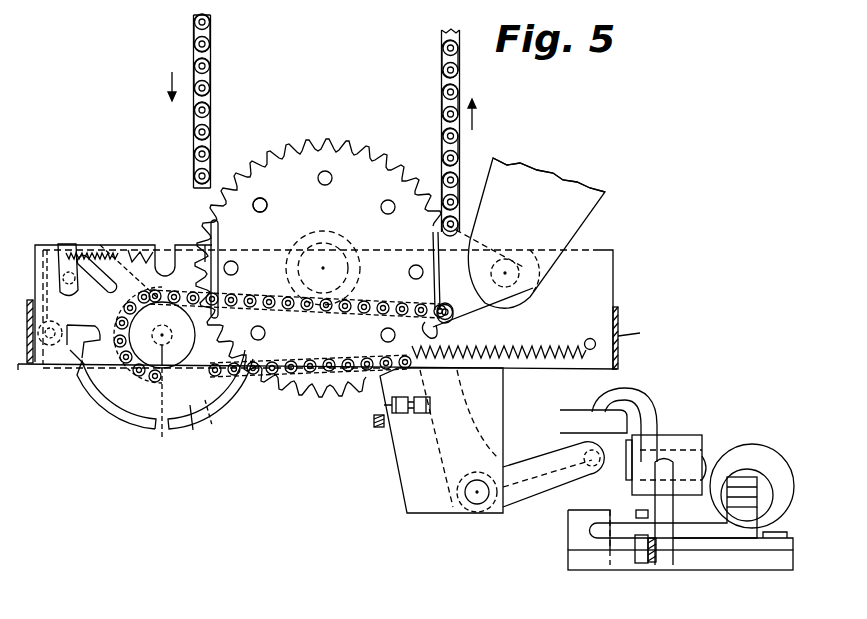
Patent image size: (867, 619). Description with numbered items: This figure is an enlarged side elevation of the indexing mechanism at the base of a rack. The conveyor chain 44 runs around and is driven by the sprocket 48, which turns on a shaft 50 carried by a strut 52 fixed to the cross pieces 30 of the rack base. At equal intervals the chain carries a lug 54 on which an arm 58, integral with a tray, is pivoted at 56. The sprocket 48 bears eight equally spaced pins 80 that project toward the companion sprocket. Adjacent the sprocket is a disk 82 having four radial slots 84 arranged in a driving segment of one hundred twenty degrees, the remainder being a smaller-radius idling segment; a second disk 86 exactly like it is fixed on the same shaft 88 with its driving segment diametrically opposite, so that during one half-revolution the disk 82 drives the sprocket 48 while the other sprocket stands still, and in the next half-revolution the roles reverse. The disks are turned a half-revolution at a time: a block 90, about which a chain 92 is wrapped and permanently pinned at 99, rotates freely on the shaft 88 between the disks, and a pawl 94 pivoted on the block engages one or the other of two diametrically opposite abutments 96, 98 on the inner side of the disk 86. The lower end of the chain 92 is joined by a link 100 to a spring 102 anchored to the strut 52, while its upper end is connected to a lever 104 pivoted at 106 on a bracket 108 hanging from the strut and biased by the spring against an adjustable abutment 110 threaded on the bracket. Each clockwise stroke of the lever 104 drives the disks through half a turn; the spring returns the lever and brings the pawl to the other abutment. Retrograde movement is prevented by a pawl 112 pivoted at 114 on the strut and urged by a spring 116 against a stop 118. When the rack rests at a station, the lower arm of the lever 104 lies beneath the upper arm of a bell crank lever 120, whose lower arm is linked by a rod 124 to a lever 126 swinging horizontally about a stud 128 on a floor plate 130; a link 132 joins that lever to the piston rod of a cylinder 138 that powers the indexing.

The cross pieces 30 is at (25, 370).
The chain 44 is at (213, 99).
The sprocket 48 is at (304, 160).
The shaft 50 is at (336, 244).
The strut 52 is at (600, 250).
The lug 54 is at (466, 231).
The pivot 56 is at (548, 286).
The arm 58 is at (581, 186).
The pins 80 is at (321, 186).
The disk 82 is at (152, 240).
The radial slots 84 is at (80, 244).
The second disk 86 is at (118, 424).
The shaft 88 is at (138, 348).
The block 90 is at (100, 380).
The chain 92 is at (302, 360).
The pawl 94 is at (207, 412).
The abutment 96 is at (190, 420).
The abutment 98 is at (135, 245).
The pin connection 99 is at (159, 412).
The link 100 is at (370, 397).
The spring 102 is at (508, 345).
The lever 104 is at (530, 455).
The pivot 106 is at (477, 505).
The bracket 108 is at (407, 484).
The adjustable abutment 110 is at (400, 431).
The pawl 112 is at (95, 244).
The pivot 114 is at (47, 364).
The spring 116 is at (110, 255).
The stop 118 is at (50, 258).
The bell crank lever 120 is at (650, 412).
The rod 124 is at (641, 566).
The lever 126 is at (687, 542).
The stud 128 is at (590, 502).
The plate 130 is at (730, 567).
The link 132 is at (760, 497).
The cylinder 138 is at (757, 452).